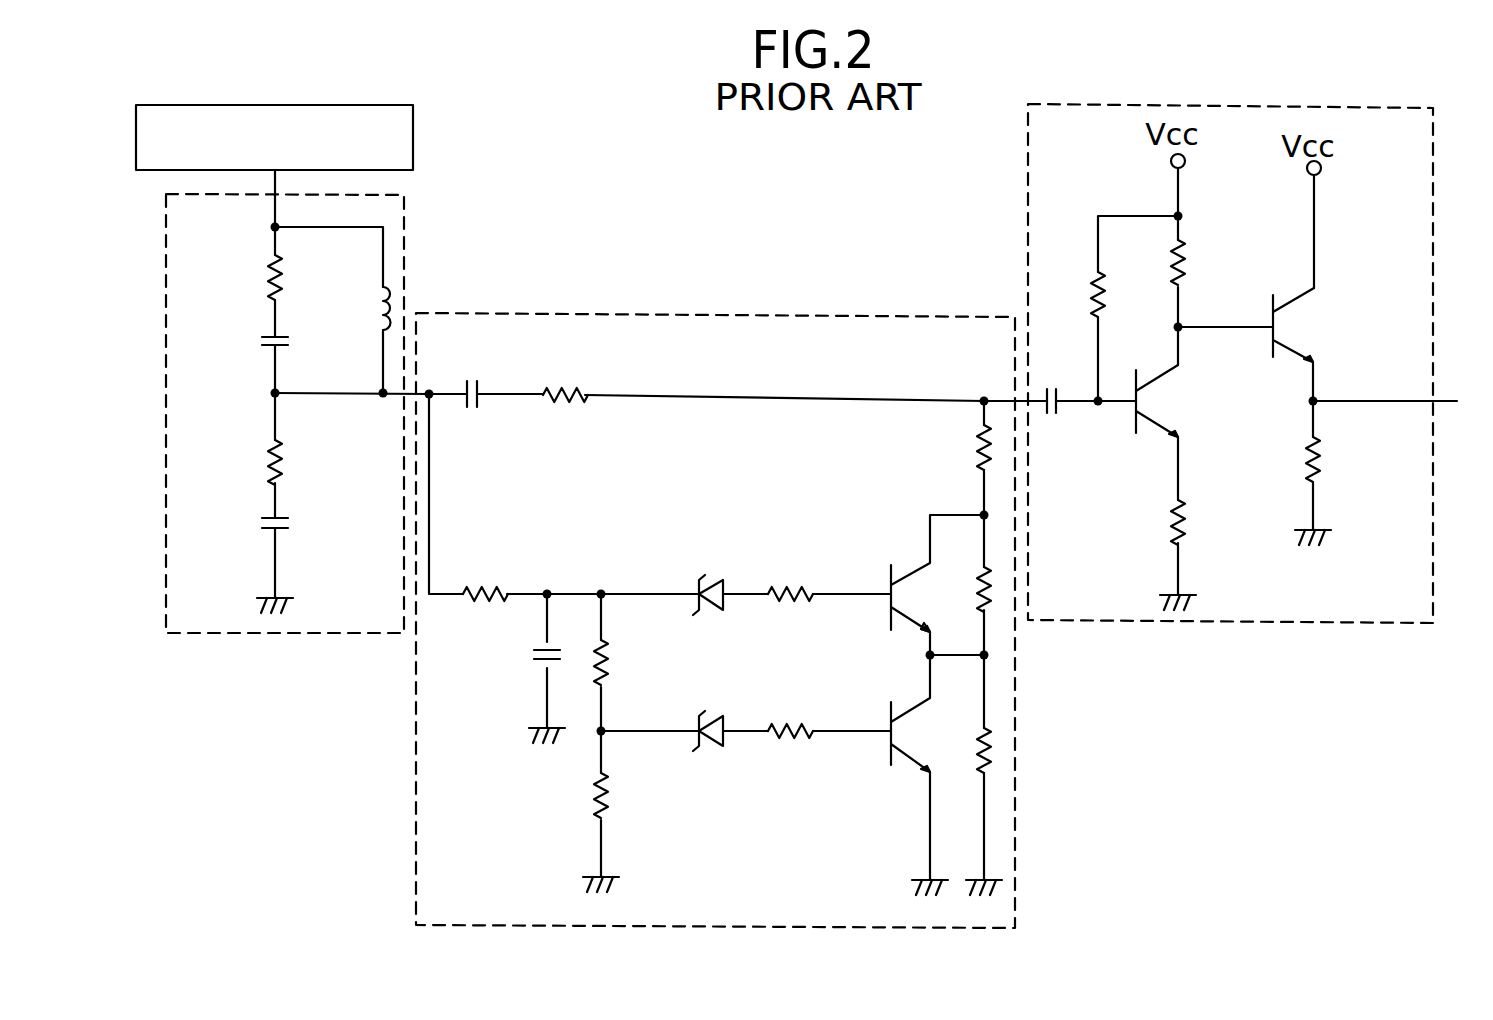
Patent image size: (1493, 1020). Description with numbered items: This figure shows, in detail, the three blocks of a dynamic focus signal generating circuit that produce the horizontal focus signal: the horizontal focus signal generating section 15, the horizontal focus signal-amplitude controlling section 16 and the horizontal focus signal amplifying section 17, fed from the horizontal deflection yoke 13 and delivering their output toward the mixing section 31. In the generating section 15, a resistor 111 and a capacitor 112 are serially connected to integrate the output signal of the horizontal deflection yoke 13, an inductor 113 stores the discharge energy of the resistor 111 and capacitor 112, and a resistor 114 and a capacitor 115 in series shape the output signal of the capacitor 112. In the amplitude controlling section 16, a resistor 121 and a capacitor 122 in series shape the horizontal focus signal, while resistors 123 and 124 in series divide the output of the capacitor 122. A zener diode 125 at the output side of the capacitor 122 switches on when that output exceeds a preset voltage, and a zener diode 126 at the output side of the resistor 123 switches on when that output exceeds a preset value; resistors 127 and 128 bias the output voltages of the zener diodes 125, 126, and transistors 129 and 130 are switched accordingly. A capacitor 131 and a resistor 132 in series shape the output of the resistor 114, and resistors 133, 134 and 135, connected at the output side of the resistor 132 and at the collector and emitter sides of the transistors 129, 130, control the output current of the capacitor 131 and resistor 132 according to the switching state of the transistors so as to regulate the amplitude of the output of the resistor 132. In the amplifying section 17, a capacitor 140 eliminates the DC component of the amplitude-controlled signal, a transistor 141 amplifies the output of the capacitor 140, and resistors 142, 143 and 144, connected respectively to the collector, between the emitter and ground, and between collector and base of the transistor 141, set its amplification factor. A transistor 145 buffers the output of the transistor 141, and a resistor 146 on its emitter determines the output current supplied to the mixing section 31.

The horizontal deflection yoke 13 is at (413, 138).
The horizontal focus signal generating section 15 is at (404, 232).
The horizontal focus signal-amplitude controlling section 16 is at (1014, 835).
The horizontal focus signal amplifying section 17 is at (1028, 190).
The mixing section 31 is at (1398, 417).
The resistor 111 is at (268, 270).
The capacitor 112 is at (266, 340).
The inductor 113 is at (378, 311).
The resistor 114 is at (268, 455).
The capacitor 115 is at (266, 521).
The resistor 121 is at (478, 586).
The capacitor 122 is at (532, 652).
The resistor 123 is at (605, 667).
The resistor 124 is at (605, 798).
The zener diode 125 is at (720, 574).
The zener diode 126 is at (719, 746).
The resistor 127 is at (802, 586).
The resistor 128 is at (800, 746).
The transistor 129 is at (915, 575).
The transistor 130 is at (912, 760).
The capacitor 131 is at (477, 411).
The resistor 132 is at (575, 410).
The resistor 133 is at (981, 451).
The resistor 134 is at (992, 592).
The resistor 135 is at (990, 750).
The capacitor 140 is at (1053, 415).
The transistor 141 is at (1172, 402).
The resistor 142 is at (1188, 262).
The resistor 143 is at (1172, 521).
The resistor 144 is at (1090, 300).
The transistor 145 is at (1318, 322).
The resistor 146 is at (1320, 455).